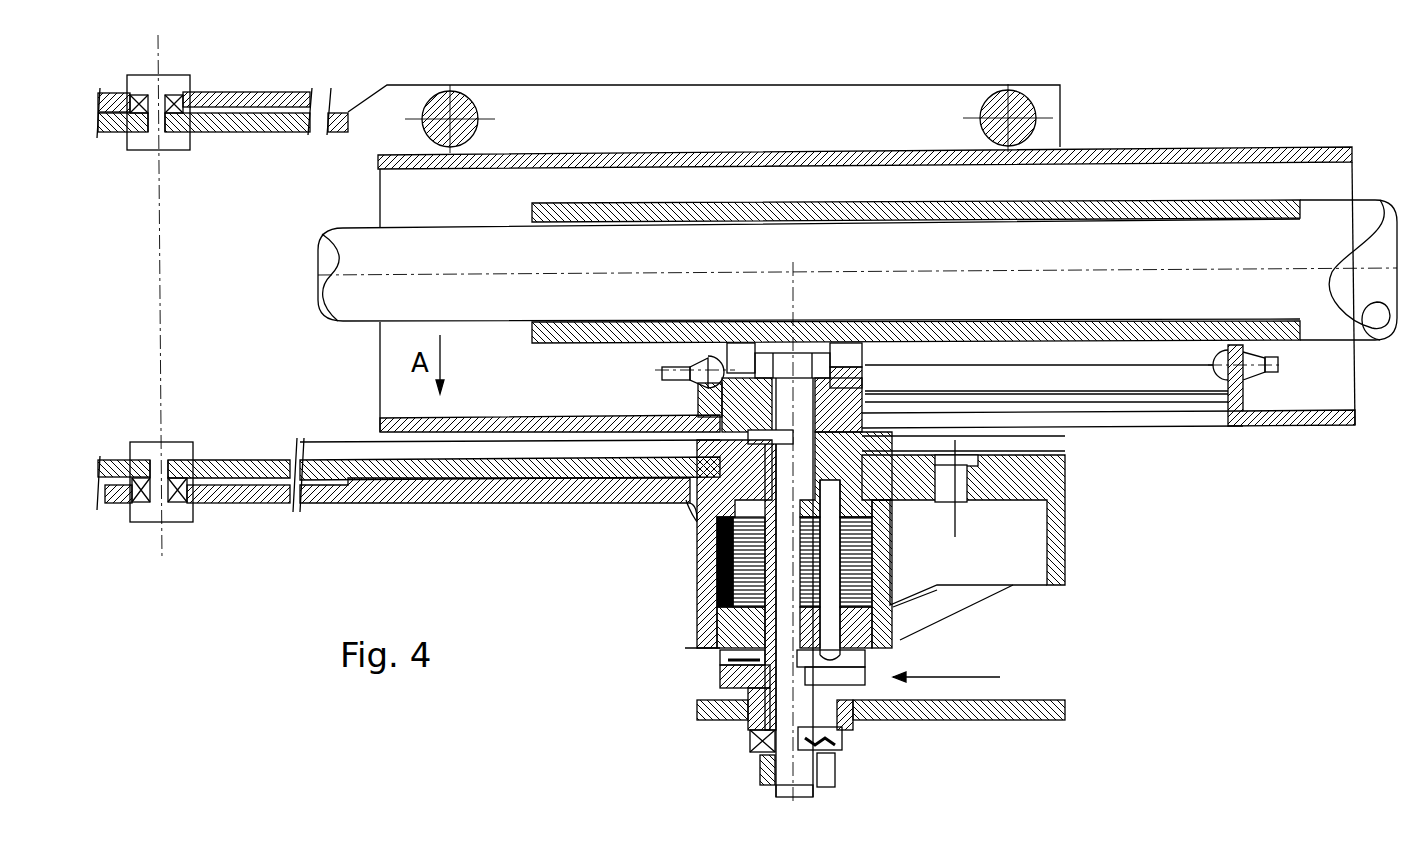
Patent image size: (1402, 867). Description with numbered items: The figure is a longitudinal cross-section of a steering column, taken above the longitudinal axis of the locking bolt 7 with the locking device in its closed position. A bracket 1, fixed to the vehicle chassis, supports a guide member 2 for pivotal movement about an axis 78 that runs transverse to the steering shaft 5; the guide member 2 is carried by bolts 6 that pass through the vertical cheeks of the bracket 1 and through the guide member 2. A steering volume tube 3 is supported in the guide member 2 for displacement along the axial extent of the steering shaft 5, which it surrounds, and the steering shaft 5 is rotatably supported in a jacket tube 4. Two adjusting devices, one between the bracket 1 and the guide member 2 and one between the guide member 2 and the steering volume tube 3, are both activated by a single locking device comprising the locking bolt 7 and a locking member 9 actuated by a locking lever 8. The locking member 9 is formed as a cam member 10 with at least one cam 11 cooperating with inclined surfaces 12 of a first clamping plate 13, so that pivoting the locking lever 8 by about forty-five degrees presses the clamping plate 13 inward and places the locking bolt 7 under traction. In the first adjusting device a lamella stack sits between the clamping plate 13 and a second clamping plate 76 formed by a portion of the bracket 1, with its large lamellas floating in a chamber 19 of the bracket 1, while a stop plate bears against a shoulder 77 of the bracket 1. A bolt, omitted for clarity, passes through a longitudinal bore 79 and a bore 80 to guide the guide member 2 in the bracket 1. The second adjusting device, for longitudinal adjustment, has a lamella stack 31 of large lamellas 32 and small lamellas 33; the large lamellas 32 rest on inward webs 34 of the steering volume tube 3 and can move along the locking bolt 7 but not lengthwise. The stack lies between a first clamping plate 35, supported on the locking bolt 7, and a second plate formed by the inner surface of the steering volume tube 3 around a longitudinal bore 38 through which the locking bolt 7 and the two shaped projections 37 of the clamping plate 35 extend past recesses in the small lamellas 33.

The bracket 1 is at (458, 492).
The guide member 2 is at (443, 463).
The steering volume tube 3 is at (405, 425).
The jacket tube 4 is at (703, 203).
The steering shaft 5 is at (627, 247).
The bolts 6 is at (157, 83).
The locking bolt 7 is at (714, 606).
The locking lever 8 is at (1040, 722).
The locking member 9 is at (957, 665).
The cam member 10 is at (818, 690).
The cam 11 is at (870, 665).
The inclined surfaces 12 is at (742, 718).
The first clamping plate 13 is at (718, 652).
The chamber 19 is at (895, 613).
The lamella stack 31 is at (852, 424).
The large lamellas 32 is at (700, 396).
The small lamellas 33 is at (740, 422).
The webs 34 is at (1237, 421).
The first clamping plate 35 is at (840, 392).
The shaped projections 37 is at (692, 518).
The longitudinal bore 38 is at (1178, 421).
The second clamping plate 76 is at (700, 528).
The shoulder 77 is at (866, 505).
The axis 78 is at (163, 545).
The longitudinal bore 79 is at (997, 500).
The bore 80 is at (1067, 466).